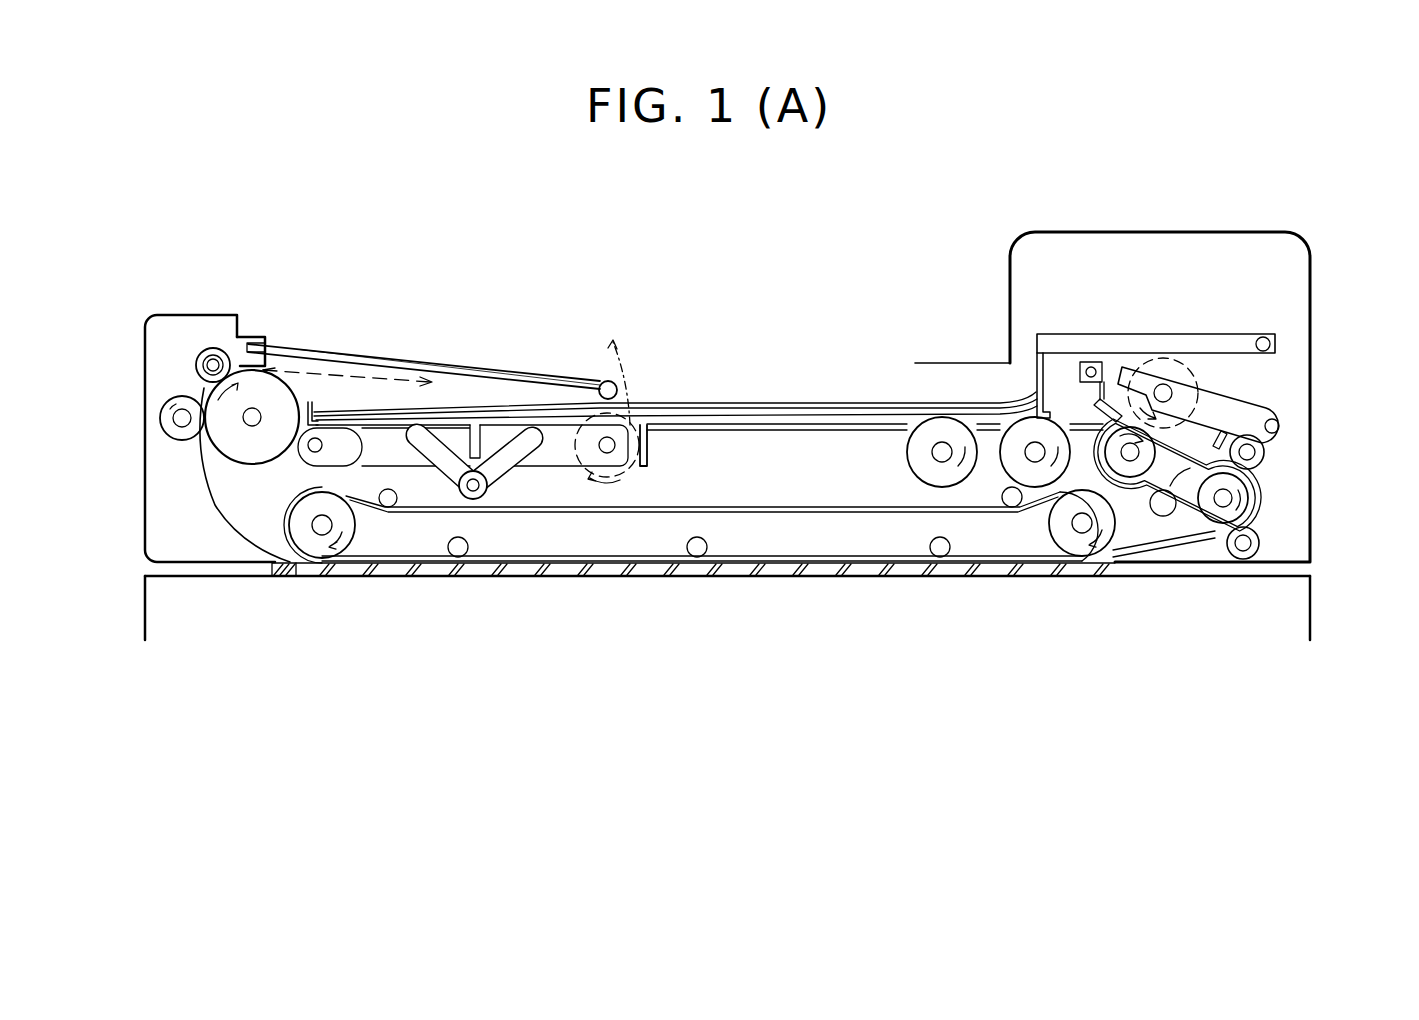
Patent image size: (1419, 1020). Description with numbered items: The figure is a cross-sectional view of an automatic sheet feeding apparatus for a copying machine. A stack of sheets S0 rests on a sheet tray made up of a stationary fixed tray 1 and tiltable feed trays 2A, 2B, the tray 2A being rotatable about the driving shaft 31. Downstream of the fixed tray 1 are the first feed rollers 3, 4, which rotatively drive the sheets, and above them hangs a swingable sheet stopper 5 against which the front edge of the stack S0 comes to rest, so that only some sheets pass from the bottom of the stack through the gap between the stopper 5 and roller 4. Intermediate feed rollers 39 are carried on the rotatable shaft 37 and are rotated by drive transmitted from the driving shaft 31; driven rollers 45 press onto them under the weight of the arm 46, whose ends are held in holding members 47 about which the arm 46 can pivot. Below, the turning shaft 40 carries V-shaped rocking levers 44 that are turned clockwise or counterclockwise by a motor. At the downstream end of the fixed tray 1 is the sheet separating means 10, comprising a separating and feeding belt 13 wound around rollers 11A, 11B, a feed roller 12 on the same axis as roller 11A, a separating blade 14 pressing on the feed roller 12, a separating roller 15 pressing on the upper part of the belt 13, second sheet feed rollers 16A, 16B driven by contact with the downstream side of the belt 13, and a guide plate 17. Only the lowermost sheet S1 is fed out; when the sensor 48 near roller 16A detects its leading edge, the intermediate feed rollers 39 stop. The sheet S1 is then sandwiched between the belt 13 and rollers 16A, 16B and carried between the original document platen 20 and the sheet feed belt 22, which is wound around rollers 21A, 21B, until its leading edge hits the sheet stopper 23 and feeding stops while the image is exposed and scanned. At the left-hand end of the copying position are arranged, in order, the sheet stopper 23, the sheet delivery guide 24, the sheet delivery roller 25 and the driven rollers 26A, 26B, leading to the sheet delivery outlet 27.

The fixed tray 1 is at (784, 430).
The tiltable feed tray 2A is at (362, 447).
The tiltable feed tray 2B is at (570, 450).
The first feed roller 3 is at (907, 458).
The first feed roller 4 is at (1008, 480).
The swingable sheet stopper 5 is at (1093, 405).
The sheet separating means 10 is at (1332, 272).
The roller 11A is at (1124, 470).
The roller 11B is at (1218, 515).
The feed roller 12 is at (1166, 460).
The sheet separating and feeding belt 13 is at (1258, 497).
The sheet separating blade 14 is at (1036, 386).
The sheet separating roller 15 is at (1198, 378).
The second sheet feed roller 16A is at (1265, 452).
The second sheet feed roller 16B is at (1260, 546).
The guide plate 17 is at (1258, 512).
The original document platen 20 is at (738, 578).
The roller 21A is at (1064, 542).
The roller 21B is at (360, 527).
The sheet feed belt 22 is at (815, 562).
The sheet stopper 23 is at (283, 579).
The sheet delivery guide 24 is at (208, 505).
The sheet delivery roller 25 is at (223, 453).
The driven roller 26A is at (160, 416).
The driven roller 26B is at (196, 370).
The sheet delivery outlet 27 is at (267, 368).
The driving shaft 31 is at (312, 448).
The rotatable shaft 37 is at (616, 445).
The intermediate feed rollers 39 is at (627, 470).
The turning shaft 40 is at (490, 486).
The V-shaped rocking levers 44 is at (450, 492).
The driven rollers 45 is at (606, 382).
The arm 46 is at (484, 377).
The holding members 47 is at (262, 337).
The sensor 48 is at (1276, 412).
The stack of sheets S0 is at (712, 401).
The sheet S1 is at (378, 377).